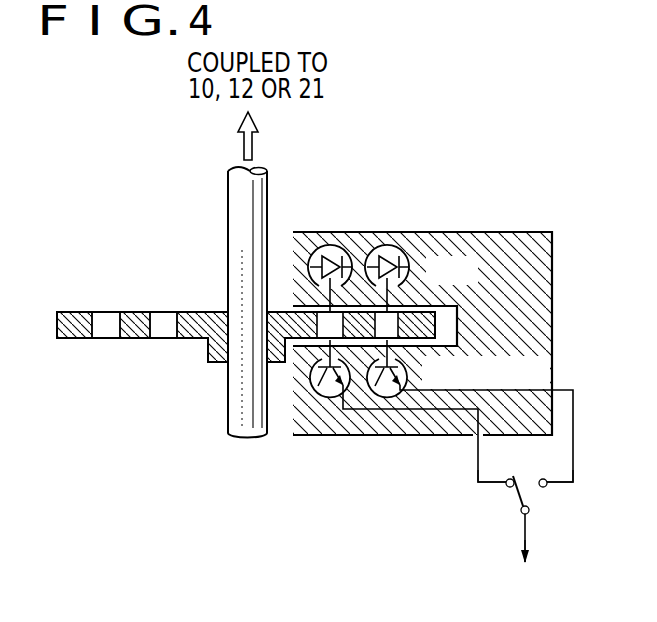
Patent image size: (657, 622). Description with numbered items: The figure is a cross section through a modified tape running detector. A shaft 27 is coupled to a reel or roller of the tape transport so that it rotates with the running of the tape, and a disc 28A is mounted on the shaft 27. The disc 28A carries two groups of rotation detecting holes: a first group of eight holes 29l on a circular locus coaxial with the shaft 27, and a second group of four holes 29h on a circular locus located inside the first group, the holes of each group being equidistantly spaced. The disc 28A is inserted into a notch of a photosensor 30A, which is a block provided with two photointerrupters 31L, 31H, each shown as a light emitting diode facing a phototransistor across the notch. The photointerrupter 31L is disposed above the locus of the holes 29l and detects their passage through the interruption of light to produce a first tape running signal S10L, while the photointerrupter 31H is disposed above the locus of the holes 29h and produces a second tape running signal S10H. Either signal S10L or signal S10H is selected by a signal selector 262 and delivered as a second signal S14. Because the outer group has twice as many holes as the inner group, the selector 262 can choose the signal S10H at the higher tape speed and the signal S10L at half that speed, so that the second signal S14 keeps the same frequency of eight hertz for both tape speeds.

The shaft 27 is at (228, 217).
The disc 28A is at (139, 312).
The holes 29l is at (101, 338).
The holes 29h is at (160, 338).
The photosensor 30A is at (490, 232).
The photointerrupter 31H is at (326, 398).
The photointerrupter 31L is at (381, 398).
The signal selector 262 is at (523, 516).
The second tape running signal S10H is at (478, 482).
The first tape running signal S10L is at (573, 470).
The second signal S14 is at (527, 568).